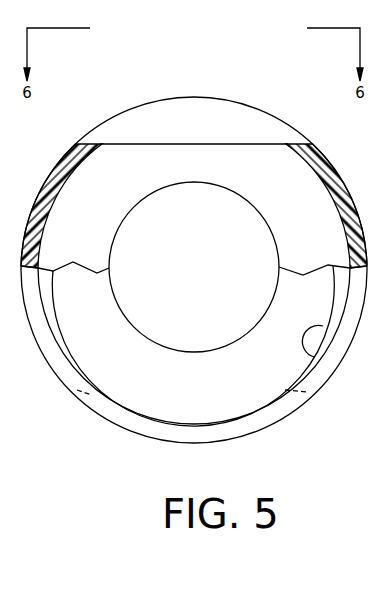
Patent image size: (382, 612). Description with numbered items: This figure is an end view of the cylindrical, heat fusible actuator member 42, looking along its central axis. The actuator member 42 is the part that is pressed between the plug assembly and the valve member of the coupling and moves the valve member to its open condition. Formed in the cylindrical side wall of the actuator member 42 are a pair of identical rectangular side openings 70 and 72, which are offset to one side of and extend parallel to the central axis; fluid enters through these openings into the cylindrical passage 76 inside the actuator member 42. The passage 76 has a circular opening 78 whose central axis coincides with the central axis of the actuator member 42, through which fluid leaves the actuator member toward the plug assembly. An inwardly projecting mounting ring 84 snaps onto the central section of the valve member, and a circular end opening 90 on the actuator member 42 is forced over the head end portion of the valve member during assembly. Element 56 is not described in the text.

The actuator member 42 is at (282, 108).
The outer wall 56 is at (37, 348).
The rectangular side opening 70 is at (186, 144).
The rectangular side opening 72 is at (97, 392).
The cylindrical passage 76 is at (102, 183).
The circular opening 78 is at (314, 357).
The mounting ring 84 is at (217, 385).
The circular end opening 90 is at (177, 284).